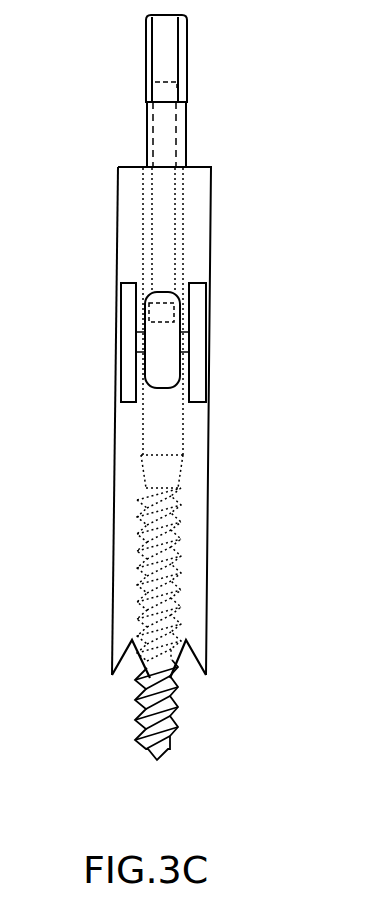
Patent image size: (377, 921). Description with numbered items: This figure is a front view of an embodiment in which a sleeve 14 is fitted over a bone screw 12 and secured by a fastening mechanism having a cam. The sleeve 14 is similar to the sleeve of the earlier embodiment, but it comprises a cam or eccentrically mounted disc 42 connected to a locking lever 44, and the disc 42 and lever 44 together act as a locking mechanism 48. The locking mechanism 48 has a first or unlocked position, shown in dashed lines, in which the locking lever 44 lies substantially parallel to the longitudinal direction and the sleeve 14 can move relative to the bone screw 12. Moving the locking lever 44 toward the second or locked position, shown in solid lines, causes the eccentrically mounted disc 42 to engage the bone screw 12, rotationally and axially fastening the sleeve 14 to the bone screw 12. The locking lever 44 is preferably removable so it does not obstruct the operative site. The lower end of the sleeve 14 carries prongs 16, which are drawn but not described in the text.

The bone screw 12 is at (176, 756).
The sleeve 14 is at (212, 603).
The prongs 16 is at (198, 687).
The eccentrically mounted disc 42 is at (172, 340).
The locking lever 44 is at (182, 146).
The locking mechanism 48 is at (97, 363).